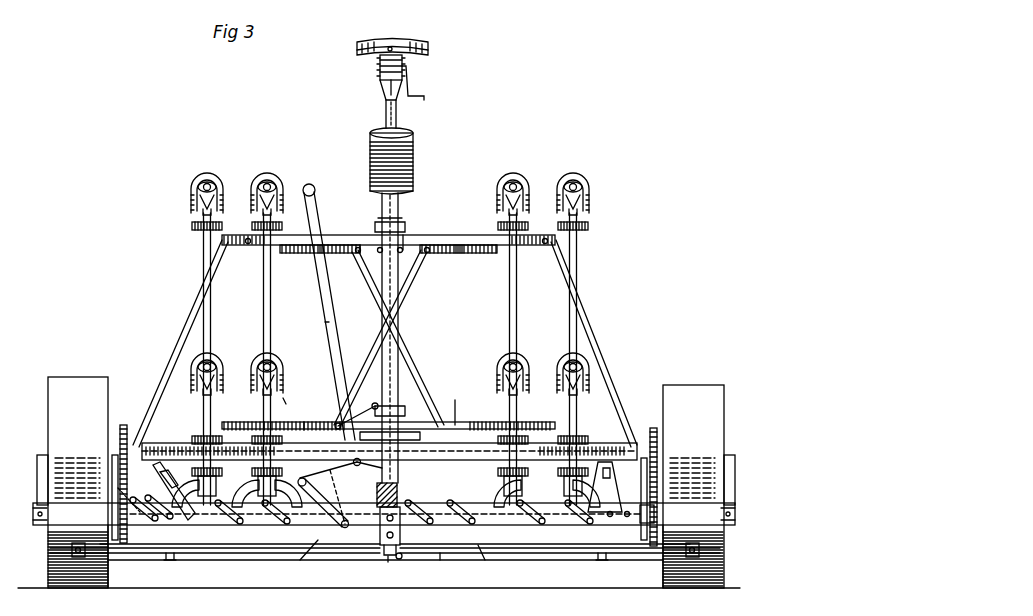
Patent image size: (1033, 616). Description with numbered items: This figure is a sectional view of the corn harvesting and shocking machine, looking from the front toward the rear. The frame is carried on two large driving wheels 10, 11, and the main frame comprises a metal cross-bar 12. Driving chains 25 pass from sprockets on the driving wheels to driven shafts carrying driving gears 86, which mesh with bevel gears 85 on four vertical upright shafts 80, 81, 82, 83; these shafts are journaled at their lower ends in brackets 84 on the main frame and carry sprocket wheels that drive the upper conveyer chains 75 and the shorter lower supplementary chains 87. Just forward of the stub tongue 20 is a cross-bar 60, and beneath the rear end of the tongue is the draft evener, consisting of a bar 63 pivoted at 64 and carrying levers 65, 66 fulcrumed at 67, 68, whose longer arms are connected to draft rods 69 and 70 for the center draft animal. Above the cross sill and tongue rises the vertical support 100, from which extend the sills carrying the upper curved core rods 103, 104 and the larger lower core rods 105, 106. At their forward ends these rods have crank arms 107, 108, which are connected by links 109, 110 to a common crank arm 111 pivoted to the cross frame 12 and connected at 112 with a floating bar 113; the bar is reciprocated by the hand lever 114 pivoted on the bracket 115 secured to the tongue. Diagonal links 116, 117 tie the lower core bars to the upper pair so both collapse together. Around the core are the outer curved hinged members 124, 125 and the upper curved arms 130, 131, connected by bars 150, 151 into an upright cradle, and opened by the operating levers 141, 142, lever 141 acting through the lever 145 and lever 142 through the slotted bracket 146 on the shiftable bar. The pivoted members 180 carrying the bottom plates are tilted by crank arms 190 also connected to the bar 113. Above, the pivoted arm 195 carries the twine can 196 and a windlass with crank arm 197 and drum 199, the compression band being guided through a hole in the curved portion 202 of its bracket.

The curved portion 202 is at (412, 45).
The winding drum 199 is at (404, 62).
The crank arm 197 is at (410, 88).
The arm 195 is at (400, 116).
The twine can 196 is at (372, 136).
The vertical support 100 is at (400, 389).
The stub tongue 20 is at (398, 492).
The draft rod 69 is at (386, 556).
The curved arm 130 is at (338, 236).
The curved arm 131 is at (433, 239).
The upper curved core rod 103 is at (300, 258).
The upper curved core rod 104 is at (458, 254).
The upper conveyer chain 75 is at (190, 195).
The lower supplementary chain 87 is at (250, 370).
The vertical upright shaft 80 is at (203, 270).
The vertical upright shaft 81 is at (263, 284).
The vertical upright shaft 82 is at (509, 307).
The vertical upright shaft 83 is at (569, 307).
The connecting bar 151 is at (170, 332).
The connecting bar 150 is at (593, 320).
The diagonal link 117 is at (375, 302).
The diagonal link 116 is at (418, 376).
The hand lever 114 is at (326, 322).
The curved hinged member 125 is at (455, 399).
The curved hinged member 124 is at (284, 398).
The lower curved core rod 105 is at (303, 422).
The lower curved core rod 106 is at (450, 426).
The crank arm 108 is at (400, 414).
The crank arm 107 is at (395, 438).
The link 110 is at (342, 430).
The bracket 115 is at (385, 468).
The link 109 is at (315, 474).
The common crank arm 111 is at (318, 492).
The pivotal connection 112 is at (345, 540).
The floating bar 113 is at (330, 548).
The operating lever 141 is at (175, 444).
The operating lever 142 is at (636, 454).
The bracket 84 is at (608, 485).
The bevel gear 85 is at (561, 489).
The crank arm 190 is at (348, 507).
The pivoted member 180 is at (125, 498).
The driving chain 25 is at (124, 436).
The driving wheel 10 is at (78, 482).
The driving wheel 11 is at (686, 390).
The lever 145 is at (118, 486).
The bracket 146 is at (656, 488).
The cross-bar 12 is at (384, 515).
The lever 65 is at (192, 556).
The lever 66 is at (645, 556).
The fulcrum 67 is at (170, 567).
The fulcrum 68 is at (606, 567).
The driving gear 86 is at (565, 542).
The cross-bar 60 is at (533, 556).
The evener bar 63 is at (436, 556).
The pivot 64 is at (386, 565).
The draft rod 70 is at (402, 562).